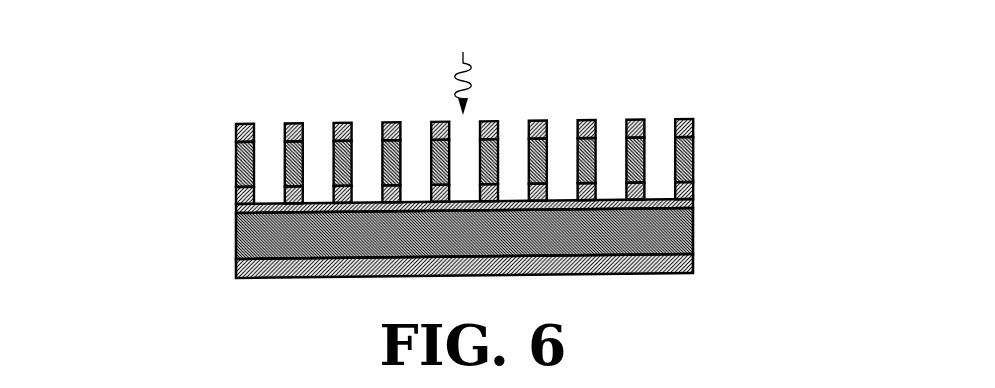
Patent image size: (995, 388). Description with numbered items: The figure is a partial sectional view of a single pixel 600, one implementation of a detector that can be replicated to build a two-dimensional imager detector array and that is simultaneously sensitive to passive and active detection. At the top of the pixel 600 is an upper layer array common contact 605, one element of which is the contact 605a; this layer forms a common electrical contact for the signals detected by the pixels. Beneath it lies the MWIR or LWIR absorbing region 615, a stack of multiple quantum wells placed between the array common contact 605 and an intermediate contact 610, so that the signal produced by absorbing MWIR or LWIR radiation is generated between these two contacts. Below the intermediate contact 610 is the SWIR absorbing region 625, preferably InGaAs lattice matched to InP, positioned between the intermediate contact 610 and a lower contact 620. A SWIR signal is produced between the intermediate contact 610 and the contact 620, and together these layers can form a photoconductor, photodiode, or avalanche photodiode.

The pixel 600 is at (618, 42).
The array common contact 605 is at (235, 126).
The contact 605a is at (694, 124).
The MWIR or LWIR absorbing region 615 is at (694, 164).
The intermediate contact 610 is at (236, 204).
The SWIR absorbing region 625 is at (694, 236).
The contact 620 is at (236, 272).